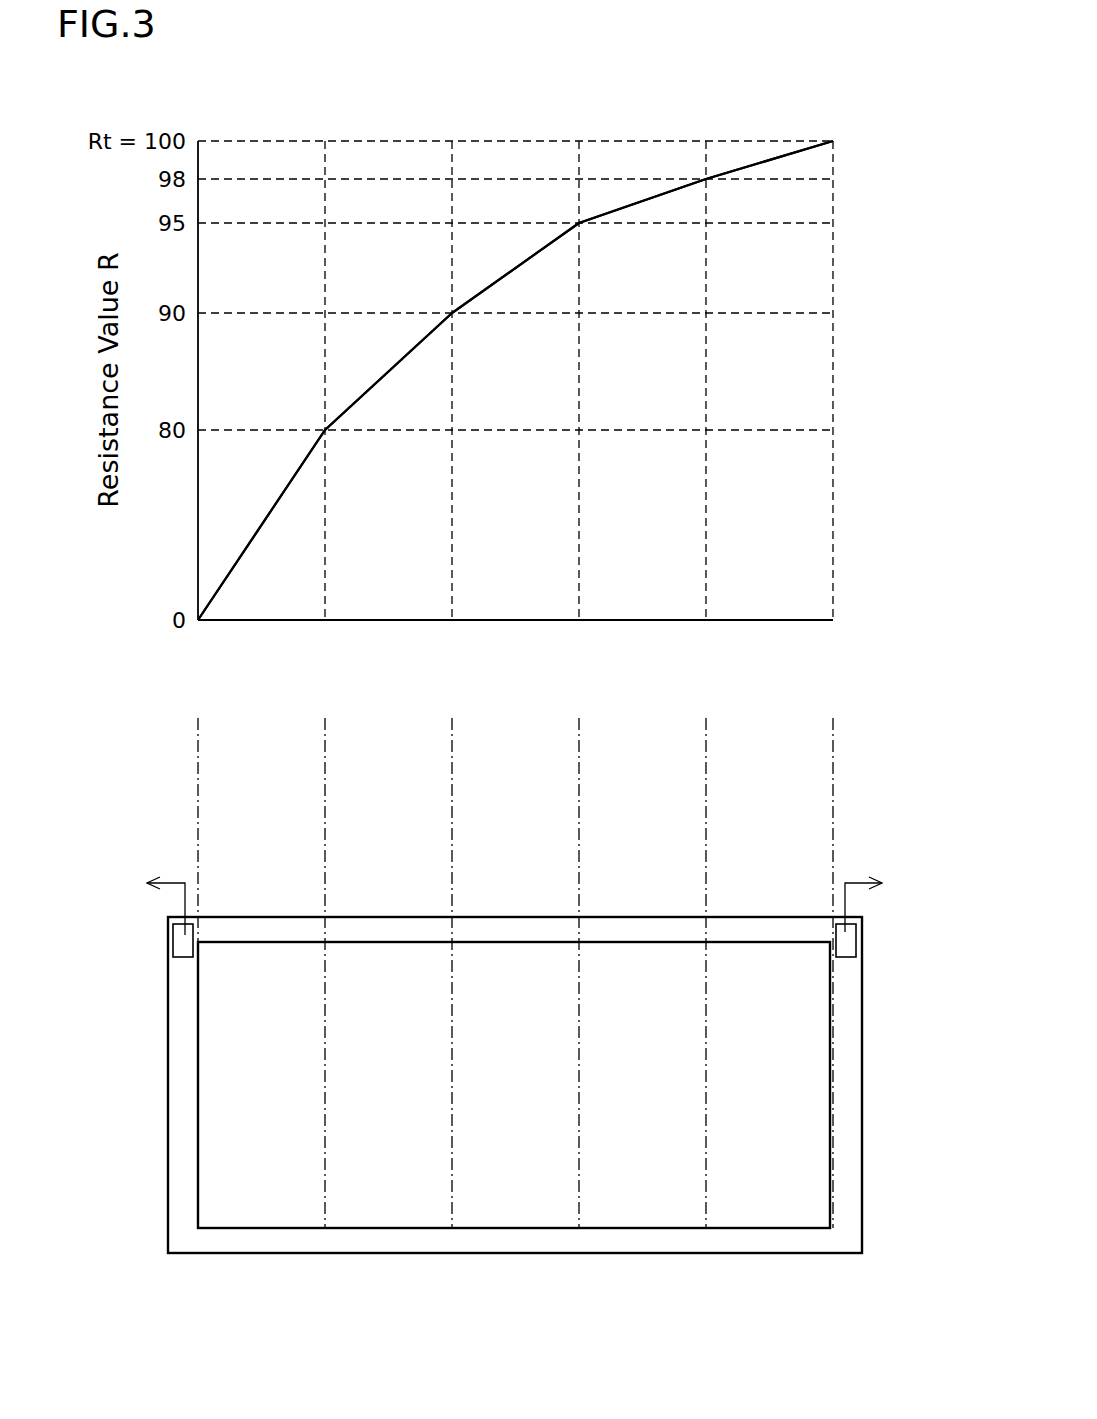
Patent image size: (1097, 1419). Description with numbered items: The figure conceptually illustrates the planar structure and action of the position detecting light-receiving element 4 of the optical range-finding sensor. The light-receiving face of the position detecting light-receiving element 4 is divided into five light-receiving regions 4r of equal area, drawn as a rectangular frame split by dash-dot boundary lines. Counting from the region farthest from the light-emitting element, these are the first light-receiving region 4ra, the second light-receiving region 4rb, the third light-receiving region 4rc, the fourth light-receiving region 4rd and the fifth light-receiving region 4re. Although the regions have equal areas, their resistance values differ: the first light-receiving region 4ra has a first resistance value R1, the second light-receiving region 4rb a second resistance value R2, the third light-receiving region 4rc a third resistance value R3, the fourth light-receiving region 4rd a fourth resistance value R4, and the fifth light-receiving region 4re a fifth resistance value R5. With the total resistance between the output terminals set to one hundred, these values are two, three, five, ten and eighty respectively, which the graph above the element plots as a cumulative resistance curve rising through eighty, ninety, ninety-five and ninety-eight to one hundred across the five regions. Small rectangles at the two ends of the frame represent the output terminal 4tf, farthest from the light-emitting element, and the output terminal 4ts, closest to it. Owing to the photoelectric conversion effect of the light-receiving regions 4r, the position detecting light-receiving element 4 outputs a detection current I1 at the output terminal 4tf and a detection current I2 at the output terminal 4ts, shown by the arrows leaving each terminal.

The position detecting light-receiving element 4 is at (922, 771).
The light-receiving regions 4r is at (514, 1085).
The first light-receiving region 4ra is at (770, 1207).
The second light-receiving region 4rb is at (643, 1207).
The third light-receiving region 4rc is at (515, 1207).
The fourth light-receiving region 4rd is at (390, 1207).
The fifth light-receiving region 4re is at (262, 1207).
The output terminal 4ts is at (172, 940).
The output terminal 4tf is at (848, 944).
The first resistance value R1 is at (766, 960).
The second resistance value R2 is at (639, 960).
The third resistance value R3 is at (511, 960).
The fourth resistance value R4 is at (386, 960).
The fifth resistance value R5 is at (259, 960).
The detection current I1 is at (879, 881).
The detection current I2 is at (158, 883).